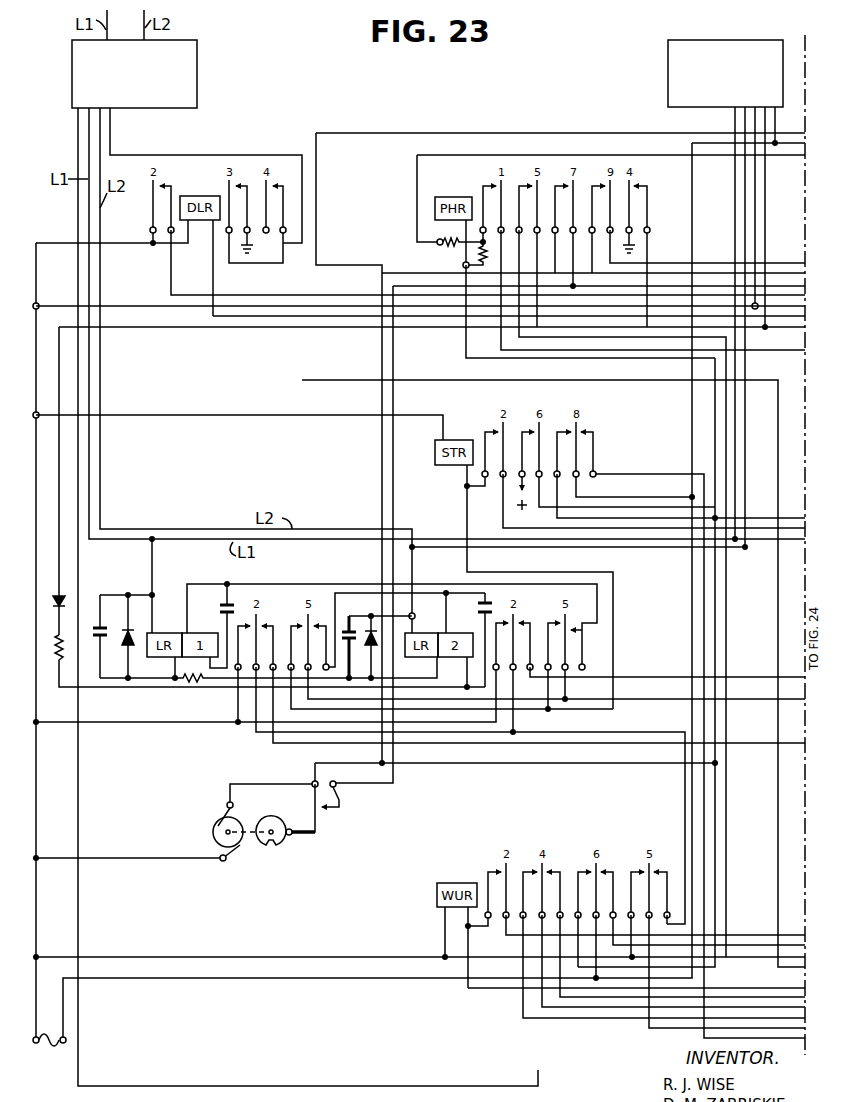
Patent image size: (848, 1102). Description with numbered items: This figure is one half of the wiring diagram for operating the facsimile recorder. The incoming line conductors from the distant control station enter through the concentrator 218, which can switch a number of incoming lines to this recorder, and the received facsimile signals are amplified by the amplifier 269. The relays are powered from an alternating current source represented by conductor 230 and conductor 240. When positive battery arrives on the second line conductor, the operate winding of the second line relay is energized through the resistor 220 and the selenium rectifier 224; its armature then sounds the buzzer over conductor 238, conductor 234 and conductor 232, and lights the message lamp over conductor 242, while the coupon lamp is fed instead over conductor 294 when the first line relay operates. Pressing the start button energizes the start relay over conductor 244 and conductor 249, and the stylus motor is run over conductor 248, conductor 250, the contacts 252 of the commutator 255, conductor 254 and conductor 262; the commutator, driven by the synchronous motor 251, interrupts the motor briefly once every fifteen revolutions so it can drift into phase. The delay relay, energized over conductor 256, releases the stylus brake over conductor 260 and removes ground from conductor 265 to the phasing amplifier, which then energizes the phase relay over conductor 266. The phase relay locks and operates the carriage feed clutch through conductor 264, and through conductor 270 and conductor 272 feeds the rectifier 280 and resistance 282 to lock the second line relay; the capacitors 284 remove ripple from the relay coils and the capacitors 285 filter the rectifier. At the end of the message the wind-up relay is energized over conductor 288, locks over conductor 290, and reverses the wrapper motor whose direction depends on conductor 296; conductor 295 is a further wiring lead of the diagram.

The concentrator or selector apparatus 218 is at (193, 89).
The amplifier 269 is at (668, 87).
The conductor 296 is at (78, 157).
The conductor 230 is at (68, 241).
The conductor 260 is at (340, 295).
The conductor 248 is at (157, 306).
The conductor 256 is at (258, 320).
The conductor 272 is at (178, 331).
The conductor 249 is at (280, 416).
The conductor 265 is at (495, 133).
The conductor 266 is at (582, 155).
The conductor 262 is at (381, 458).
The conductor 250 is at (394, 347).
The conductor 295 is at (340, 380).
The conductor 270 is at (603, 337).
The conductor 240 is at (692, 230).
The conductor 264 is at (800, 345).
The conductor 238 is at (705, 640).
The conductor 254 is at (716, 665).
The conductor 244 is at (503, 528).
The rectifier 280 is at (63, 598).
The resistance 282 is at (67, 658).
The capacitor 284 is at (101, 625).
The selenium rectifier 224 is at (132, 628).
The resistor 220 is at (203, 683).
The capacitor 285 is at (231, 601).
The conductor 232 is at (185, 723).
The conductor 242 is at (513, 744).
The conductor 294 is at (677, 676).
The synchronous motor 251 is at (216, 830).
The commutator 255 is at (277, 841).
The contacts 252 is at (347, 801).
The conductor 290 is at (768, 935).
The conductor 288 is at (515, 990).
The conductor 234 is at (680, 1030).